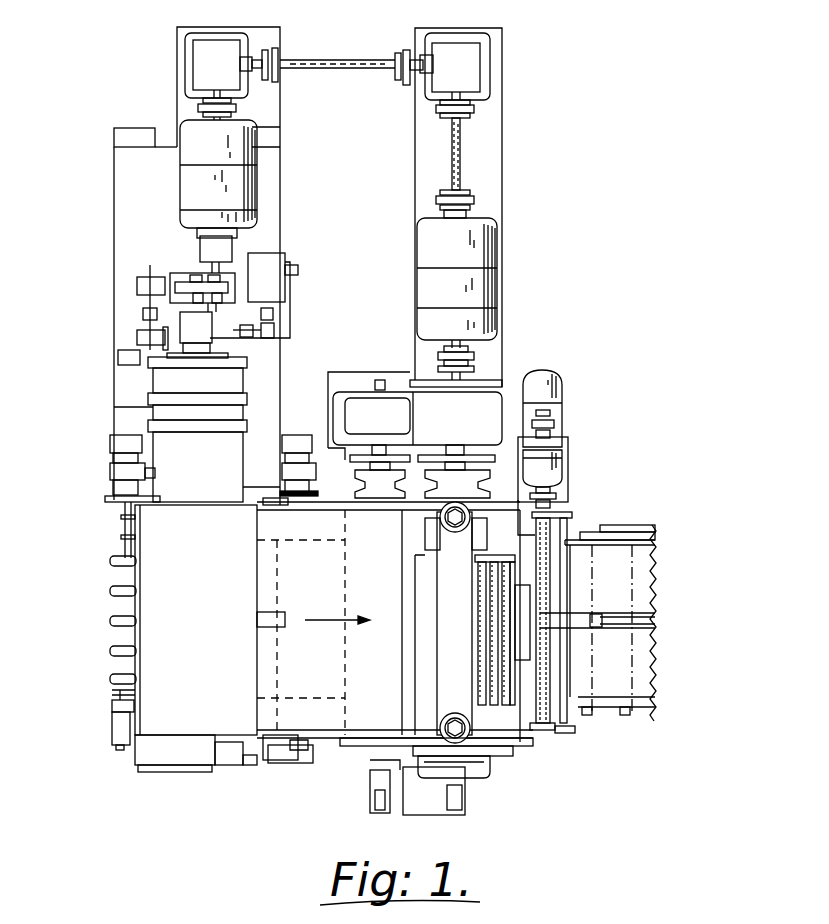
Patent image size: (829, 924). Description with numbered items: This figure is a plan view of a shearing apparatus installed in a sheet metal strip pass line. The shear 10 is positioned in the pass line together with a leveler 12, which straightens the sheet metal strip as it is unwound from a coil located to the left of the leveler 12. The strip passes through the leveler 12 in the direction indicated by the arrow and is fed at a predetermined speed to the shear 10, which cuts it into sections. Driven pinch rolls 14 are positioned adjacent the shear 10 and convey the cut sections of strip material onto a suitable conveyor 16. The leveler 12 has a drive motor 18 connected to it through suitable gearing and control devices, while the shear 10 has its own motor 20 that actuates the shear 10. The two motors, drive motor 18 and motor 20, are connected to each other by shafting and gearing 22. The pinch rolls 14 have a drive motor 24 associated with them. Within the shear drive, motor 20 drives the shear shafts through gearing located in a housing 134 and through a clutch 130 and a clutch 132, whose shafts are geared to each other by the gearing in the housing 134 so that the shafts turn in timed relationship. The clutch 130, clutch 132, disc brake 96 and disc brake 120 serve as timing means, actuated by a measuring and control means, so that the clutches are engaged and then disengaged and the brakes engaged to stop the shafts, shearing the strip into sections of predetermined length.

The shear 10 is at (510, 762).
The leveler 12 is at (122, 757).
The driven pinch rolls 14 is at (570, 731).
The conveyor 16 is at (662, 612).
The drive motor 18 is at (248, 186).
The motor 20 is at (480, 290).
The shafting and gearing 22 is at (349, 56).
The drive motor 24 is at (550, 393).
The disc brake 96 is at (478, 775).
The disc brake 120 is at (368, 770).
The clutch 130 is at (473, 470).
The clutch 132 is at (386, 472).
The housing 134 is at (450, 408).